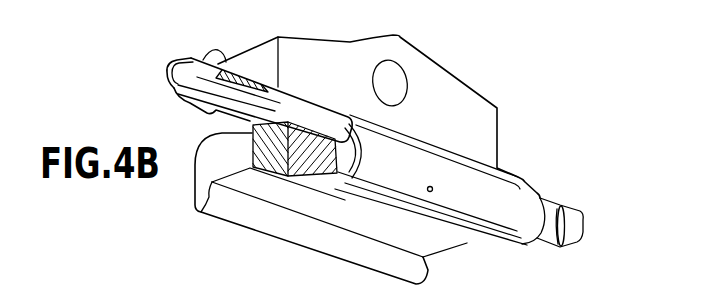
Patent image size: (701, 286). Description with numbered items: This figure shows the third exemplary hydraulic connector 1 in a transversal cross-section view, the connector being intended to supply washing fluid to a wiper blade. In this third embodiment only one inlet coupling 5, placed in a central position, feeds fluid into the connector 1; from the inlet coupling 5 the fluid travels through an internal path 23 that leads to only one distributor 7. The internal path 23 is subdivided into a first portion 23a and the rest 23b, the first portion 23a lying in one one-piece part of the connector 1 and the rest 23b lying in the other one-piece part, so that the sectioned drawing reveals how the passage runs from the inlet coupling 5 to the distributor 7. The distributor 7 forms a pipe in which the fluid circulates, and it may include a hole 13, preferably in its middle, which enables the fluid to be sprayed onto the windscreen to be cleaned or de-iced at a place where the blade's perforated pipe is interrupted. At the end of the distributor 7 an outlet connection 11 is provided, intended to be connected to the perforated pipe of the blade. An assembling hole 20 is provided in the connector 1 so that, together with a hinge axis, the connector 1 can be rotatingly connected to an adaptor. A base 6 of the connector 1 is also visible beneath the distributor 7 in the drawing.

The hydraulic connector 1 is at (447, 56).
The inlet coupling 5 is at (207, 58).
The base plate 6 is at (244, 280).
The distributor 7 is at (497, 213).
The outlet connection 11 is at (572, 219).
The hole 13 is at (434, 189).
The assembling hole 20 is at (398, 71).
The internal path 23 is at (250, 96).
The first portion of the internal path 23a is at (232, 100).
The rest of the internal path 23b is at (322, 130).